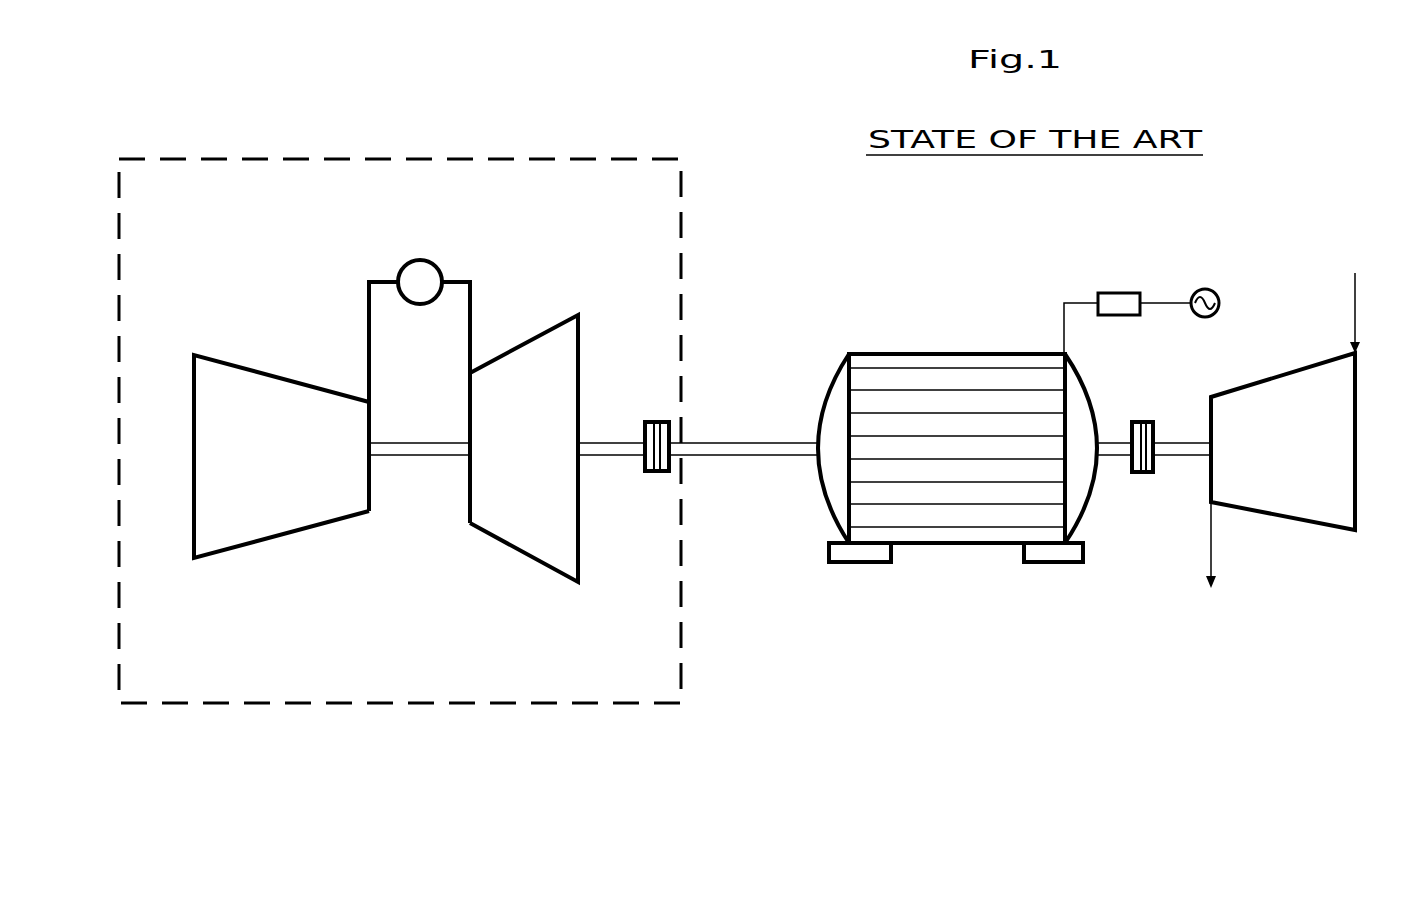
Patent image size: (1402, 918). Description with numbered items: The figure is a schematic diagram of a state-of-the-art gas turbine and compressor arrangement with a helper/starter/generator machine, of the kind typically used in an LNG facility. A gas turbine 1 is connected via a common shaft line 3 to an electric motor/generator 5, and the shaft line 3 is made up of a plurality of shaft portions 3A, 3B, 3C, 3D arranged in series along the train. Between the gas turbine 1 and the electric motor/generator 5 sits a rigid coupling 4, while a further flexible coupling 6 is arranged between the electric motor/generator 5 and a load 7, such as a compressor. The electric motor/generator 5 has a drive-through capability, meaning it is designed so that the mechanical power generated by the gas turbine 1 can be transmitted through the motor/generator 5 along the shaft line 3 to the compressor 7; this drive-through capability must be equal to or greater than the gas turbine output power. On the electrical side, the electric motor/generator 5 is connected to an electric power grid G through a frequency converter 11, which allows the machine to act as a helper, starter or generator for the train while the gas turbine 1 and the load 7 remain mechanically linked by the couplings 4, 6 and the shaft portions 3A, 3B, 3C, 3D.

The gas turbine 1 is at (700, 150).
The common shaft line 3 is at (798, 447).
The shaft portion 3A is at (607, 450).
The shaft portion 3B is at (732, 450).
The shaft portion 3C is at (1103, 437).
The shaft portion 3D is at (1178, 437).
The rigid coupling 4 is at (652, 468).
The electric motor/generator 5 is at (880, 370).
The flexible coupling 6 is at (1137, 475).
The load 7 is at (1285, 503).
The frequency converter 11 is at (1110, 305).
The electric power grid G is at (1208, 288).